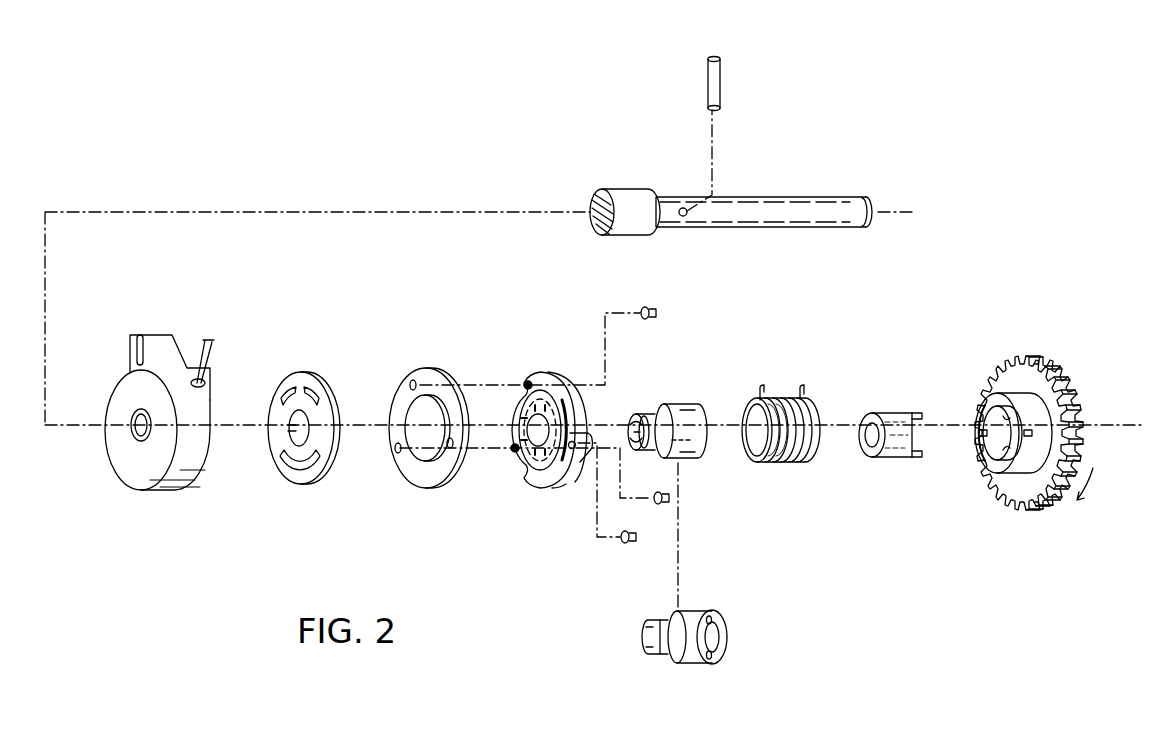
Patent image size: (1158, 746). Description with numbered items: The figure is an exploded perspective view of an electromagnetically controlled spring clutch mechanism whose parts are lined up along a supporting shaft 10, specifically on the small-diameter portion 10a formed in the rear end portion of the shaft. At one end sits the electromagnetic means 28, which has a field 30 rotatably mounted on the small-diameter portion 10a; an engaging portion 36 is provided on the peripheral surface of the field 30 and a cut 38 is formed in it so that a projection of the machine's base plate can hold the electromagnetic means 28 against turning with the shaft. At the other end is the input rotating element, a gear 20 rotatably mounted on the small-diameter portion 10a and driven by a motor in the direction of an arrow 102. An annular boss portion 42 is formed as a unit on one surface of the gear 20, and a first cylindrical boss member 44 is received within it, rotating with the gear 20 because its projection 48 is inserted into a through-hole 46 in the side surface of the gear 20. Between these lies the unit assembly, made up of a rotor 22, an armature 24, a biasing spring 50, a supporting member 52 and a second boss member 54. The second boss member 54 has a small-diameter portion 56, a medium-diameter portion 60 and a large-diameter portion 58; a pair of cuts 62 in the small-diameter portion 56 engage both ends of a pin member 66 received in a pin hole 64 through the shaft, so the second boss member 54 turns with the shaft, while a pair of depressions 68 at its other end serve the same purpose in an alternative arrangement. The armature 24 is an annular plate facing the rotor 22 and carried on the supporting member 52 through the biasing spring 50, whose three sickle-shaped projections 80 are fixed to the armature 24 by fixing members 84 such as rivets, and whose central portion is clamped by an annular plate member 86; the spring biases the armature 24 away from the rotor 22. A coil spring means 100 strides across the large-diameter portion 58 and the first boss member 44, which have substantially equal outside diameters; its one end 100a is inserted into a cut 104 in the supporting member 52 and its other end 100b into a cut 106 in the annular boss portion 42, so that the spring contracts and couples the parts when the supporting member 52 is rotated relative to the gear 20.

The supporting shaft 10 is at (628, 188).
The small-diameter portion 10a is at (798, 228).
The gear 20 is at (1038, 428).
The rotor 22 is at (318, 484).
The armature 24 is at (422, 488).
The electromagnetic means 28 is at (168, 430).
The field 30 is at (221, 411).
The engaging portion 36 is at (176, 350).
The cut 38 is at (138, 345).
The annular boss portion 42 is at (1018, 470).
The first cylindrical boss member 44 is at (893, 431).
The through-hole 46 is at (985, 462).
The projection 48 is at (916, 412).
The biasing spring 50 is at (535, 417).
The supporting member 52 is at (568, 402).
The second boss member 54 is at (684, 525).
The small-diameter portion 56 is at (642, 418).
The large-diameter portion 58 is at (697, 450).
The medium-diameter portion 60 is at (650, 416).
The cuts 62 is at (641, 446).
The pin hole 64 is at (686, 217).
The pin member 66 is at (722, 82).
The depressions 68 is at (713, 618).
The projections 80 is at (529, 381).
The fixing members 84 is at (660, 313).
The annular plate member 86 is at (530, 460).
The coil spring means 100 is at (794, 420).
The one end of coil spring means 100a is at (760, 388).
The other end of coil spring means 100b is at (805, 388).
The arrow 102 is at (1093, 482).
The cut 104 is at (585, 460).
The cut 106 is at (983, 428).